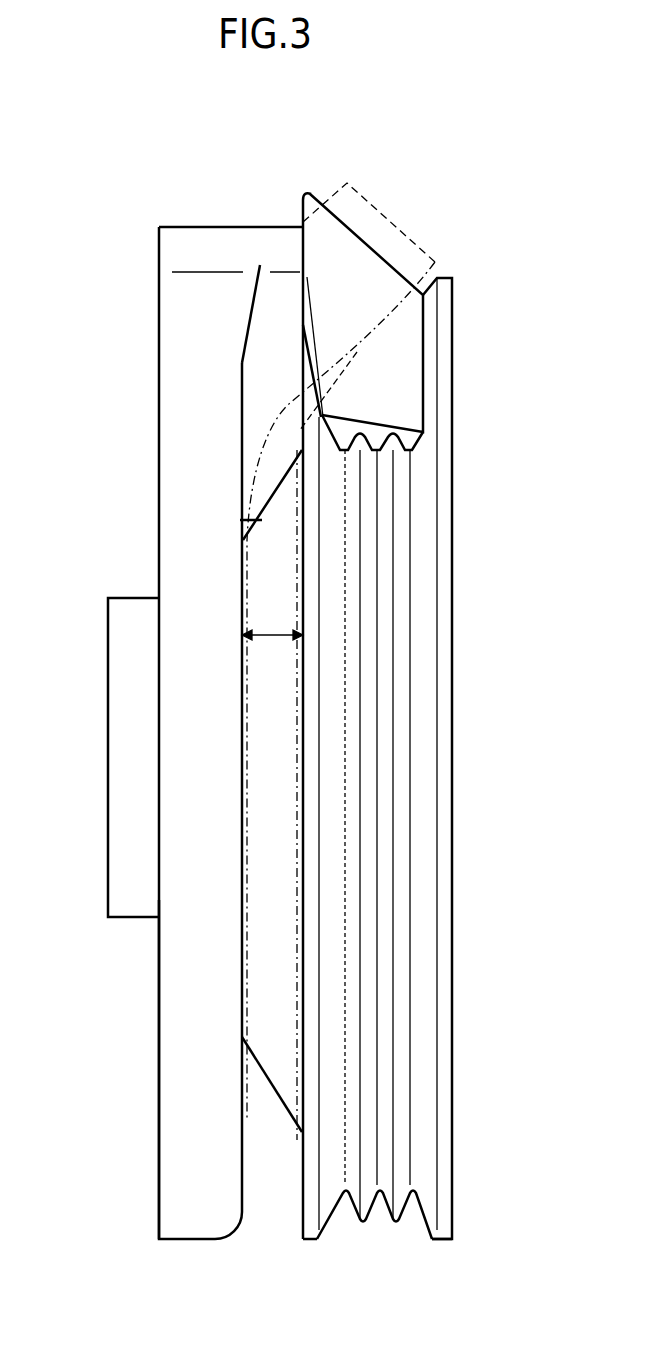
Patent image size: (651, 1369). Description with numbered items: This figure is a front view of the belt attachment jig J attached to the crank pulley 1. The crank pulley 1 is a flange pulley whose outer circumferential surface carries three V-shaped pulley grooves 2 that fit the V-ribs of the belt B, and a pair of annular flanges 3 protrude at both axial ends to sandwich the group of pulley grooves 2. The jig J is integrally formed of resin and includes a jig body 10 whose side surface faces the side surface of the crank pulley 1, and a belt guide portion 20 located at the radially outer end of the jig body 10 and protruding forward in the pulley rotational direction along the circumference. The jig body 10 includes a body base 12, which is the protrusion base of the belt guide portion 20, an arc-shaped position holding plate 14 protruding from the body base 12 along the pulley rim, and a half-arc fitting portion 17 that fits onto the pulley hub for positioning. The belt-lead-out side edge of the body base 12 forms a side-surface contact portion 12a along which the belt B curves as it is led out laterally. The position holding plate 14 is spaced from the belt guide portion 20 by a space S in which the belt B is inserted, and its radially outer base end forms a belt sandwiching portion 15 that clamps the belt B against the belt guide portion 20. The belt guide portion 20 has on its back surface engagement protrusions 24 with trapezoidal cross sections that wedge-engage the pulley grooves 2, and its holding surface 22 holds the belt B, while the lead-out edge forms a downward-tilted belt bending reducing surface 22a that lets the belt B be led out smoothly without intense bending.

The belt attachment jig J is at (133, 194).
The jig body 10 is at (229, 218).
The body base 12 is at (170, 245).
The side-surface contact portion 12a is at (262, 404).
The position holding plate 14 is at (175, 1077).
The belt sandwiching portion 15 is at (178, 330).
The fitting portion 17 is at (128, 758).
The belt guide portion 20 is at (318, 194).
The holding surface 22 is at (376, 303).
The belt bending reducing surface 22a is at (305, 323).
The engagement protrusions 24 is at (345, 450).
The crank pulley 1 is at (447, 278).
The pulley grooves 2 is at (352, 1205).
The annular flanges 3 is at (311, 1233).
The V-ribbed belt B is at (387, 216).
The space S is at (272, 651).